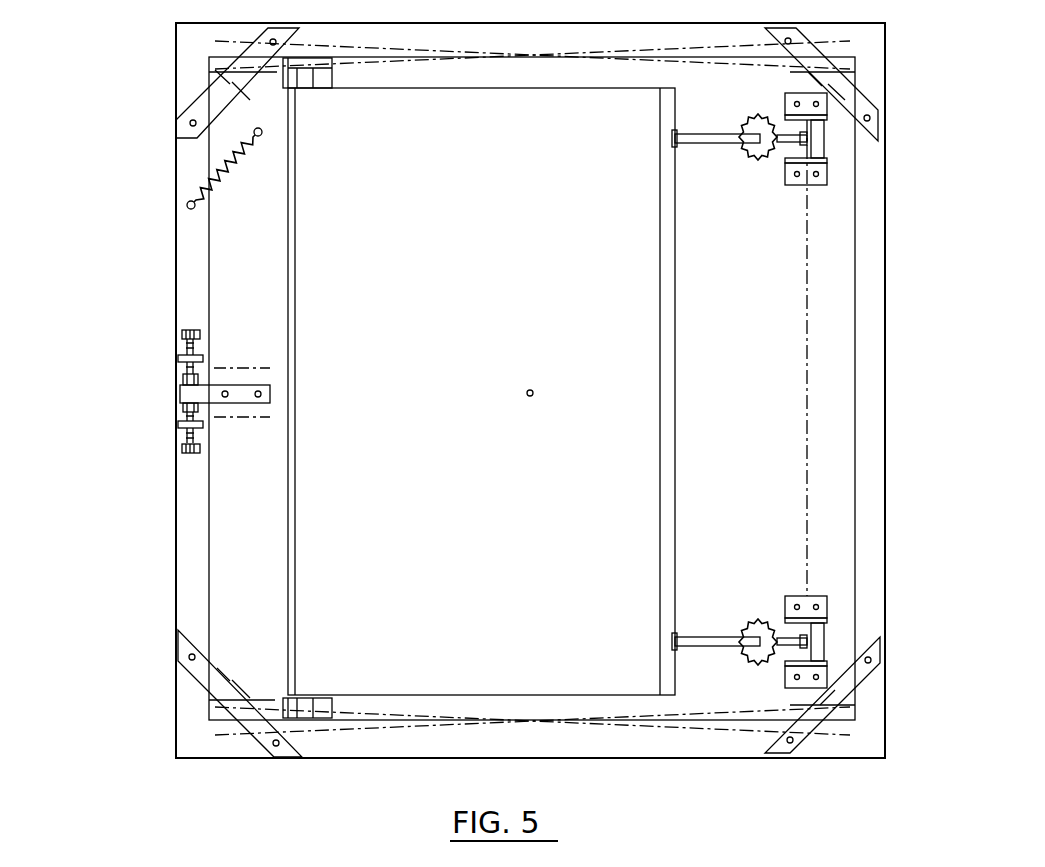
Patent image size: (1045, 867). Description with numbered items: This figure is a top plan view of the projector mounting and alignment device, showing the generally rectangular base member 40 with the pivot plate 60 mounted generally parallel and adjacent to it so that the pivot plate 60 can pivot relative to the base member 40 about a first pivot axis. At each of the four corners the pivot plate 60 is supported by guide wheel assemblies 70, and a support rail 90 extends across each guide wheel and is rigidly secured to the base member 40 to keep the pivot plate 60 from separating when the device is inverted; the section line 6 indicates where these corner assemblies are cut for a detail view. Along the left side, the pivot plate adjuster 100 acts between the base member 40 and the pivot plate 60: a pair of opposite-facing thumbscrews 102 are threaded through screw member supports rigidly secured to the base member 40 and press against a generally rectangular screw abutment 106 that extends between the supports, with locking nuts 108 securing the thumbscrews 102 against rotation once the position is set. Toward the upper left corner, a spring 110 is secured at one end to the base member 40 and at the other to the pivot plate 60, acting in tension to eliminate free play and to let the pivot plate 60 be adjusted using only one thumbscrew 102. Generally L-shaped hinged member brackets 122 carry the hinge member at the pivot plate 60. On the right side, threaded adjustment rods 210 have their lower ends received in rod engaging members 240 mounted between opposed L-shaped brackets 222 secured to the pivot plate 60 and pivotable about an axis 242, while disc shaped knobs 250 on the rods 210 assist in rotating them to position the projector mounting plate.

The base member 40 is at (868, 421).
The pivot plate 60 is at (780, 297).
The guide wheel assembly 70 is at (845, 782).
The support rail 90 is at (205, 104).
The pivot plate adjuster 100 is at (143, 409).
The screw member 102 is at (186, 330).
The screw abutment 106 is at (270, 390).
The locking nut 108 is at (183, 378).
The spring 110 is at (232, 176).
The hinged member bracket 122 is at (318, 719).
The adjustment rod 210 is at (690, 139).
The bracket 222 is at (805, 170).
The rod engaging member 240 is at (818, 140).
The axis 242 is at (807, 328).
The disc shaped knob 250 is at (752, 128).
The section line 6- 6 is at (893, 635).